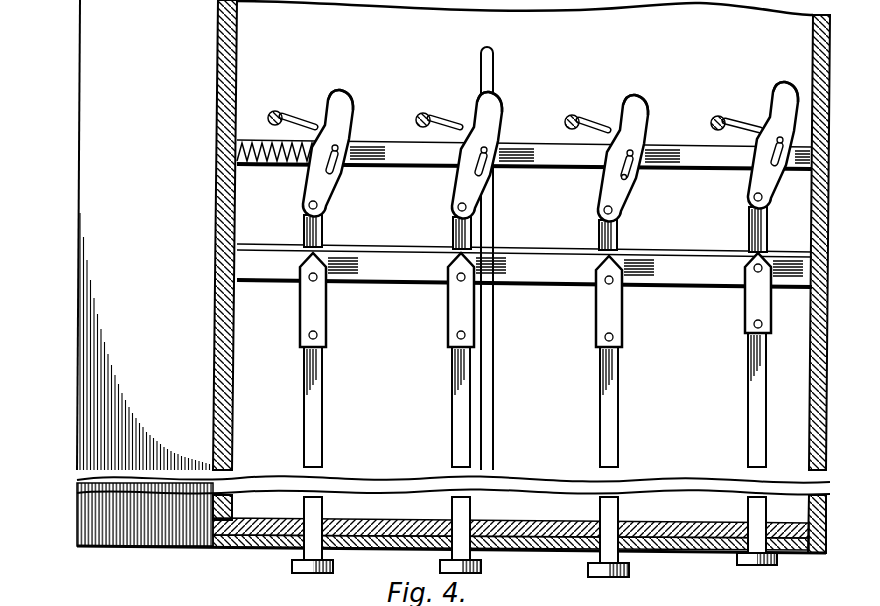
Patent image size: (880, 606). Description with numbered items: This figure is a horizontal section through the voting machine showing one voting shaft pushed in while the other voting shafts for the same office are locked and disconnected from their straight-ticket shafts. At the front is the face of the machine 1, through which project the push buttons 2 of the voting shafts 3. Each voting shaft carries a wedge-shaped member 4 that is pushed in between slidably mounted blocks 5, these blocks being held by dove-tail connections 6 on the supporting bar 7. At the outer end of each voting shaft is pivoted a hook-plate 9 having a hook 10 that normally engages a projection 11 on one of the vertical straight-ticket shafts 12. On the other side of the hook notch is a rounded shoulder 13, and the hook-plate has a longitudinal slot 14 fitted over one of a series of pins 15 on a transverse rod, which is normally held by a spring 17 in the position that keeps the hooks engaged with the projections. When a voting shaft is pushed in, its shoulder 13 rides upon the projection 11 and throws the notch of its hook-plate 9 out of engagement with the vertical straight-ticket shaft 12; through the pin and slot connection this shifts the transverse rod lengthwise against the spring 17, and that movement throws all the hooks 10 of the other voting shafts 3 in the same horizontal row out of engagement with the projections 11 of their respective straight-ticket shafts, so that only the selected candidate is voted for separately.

The face of the machine 1 is at (277, 547).
The push buttons 2 is at (587, 572).
The voting shafts 3 is at (433, 427).
The wedge-shaped member 4 is at (457, 313).
The slidably mounted blocks 5 is at (524, 268).
The dove-tail connections 6 is at (410, 168).
The supporting bar 7 is at (562, 243).
The hook-plate 9 is at (323, 192).
The hook 10 is at (343, 106).
The projection 11 is at (303, 113).
The vertical straight-ticket shafts 12 is at (272, 112).
The rounded shoulder 13 is at (325, 160).
The longitudinal slot 14 is at (619, 176).
The pins 15 is at (341, 150).
The spring 17 is at (237, 162).